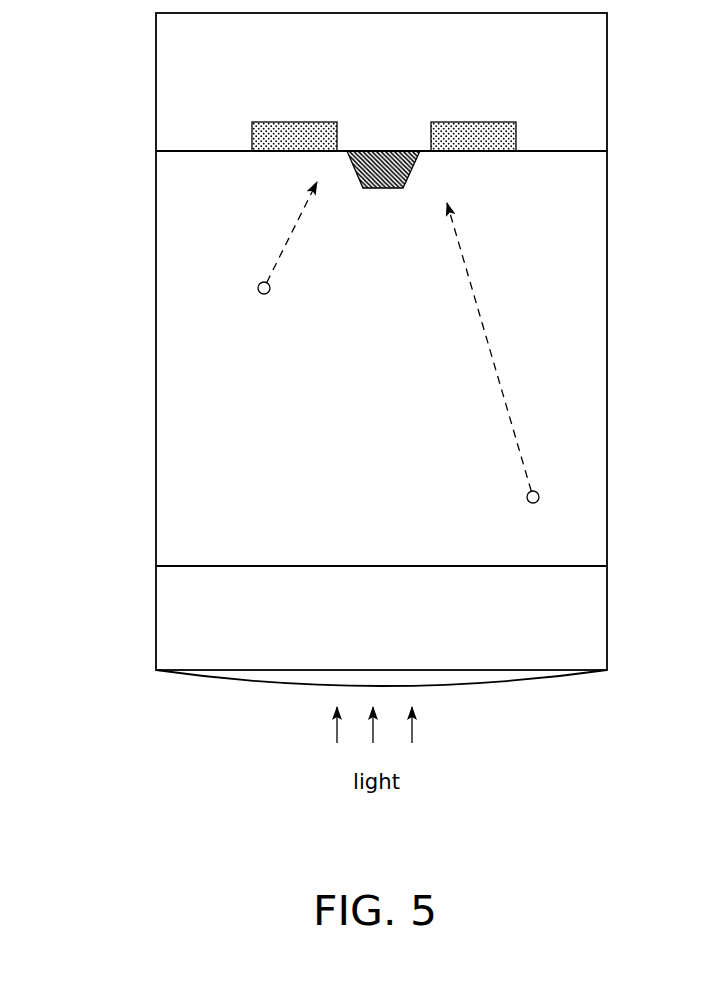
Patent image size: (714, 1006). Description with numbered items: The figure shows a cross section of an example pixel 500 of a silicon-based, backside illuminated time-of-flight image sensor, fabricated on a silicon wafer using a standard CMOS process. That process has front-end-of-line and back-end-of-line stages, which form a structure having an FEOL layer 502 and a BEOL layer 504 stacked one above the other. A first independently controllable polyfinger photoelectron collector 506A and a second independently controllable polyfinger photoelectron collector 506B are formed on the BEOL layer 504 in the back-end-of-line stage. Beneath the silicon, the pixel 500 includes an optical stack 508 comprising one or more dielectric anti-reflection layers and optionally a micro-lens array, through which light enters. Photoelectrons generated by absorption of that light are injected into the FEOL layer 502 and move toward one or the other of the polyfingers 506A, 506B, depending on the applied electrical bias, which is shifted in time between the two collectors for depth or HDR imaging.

The pixel 500 is at (95, 595).
The FEOL layer 502 is at (438, 341).
The BEOL layer 504 is at (438, 93).
The first independently controllable polyfinger photoelectron collector 506A is at (276, 122).
The second independently controllable polyfinger photoelectron collector 506B is at (489, 122).
The optical stack 508 is at (447, 638).